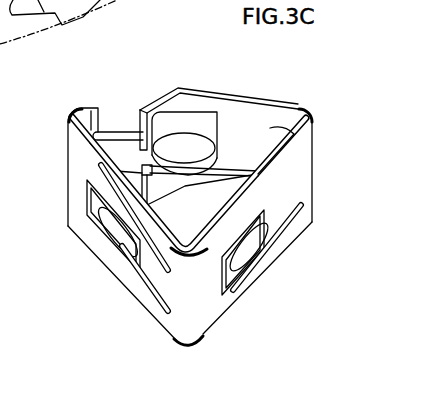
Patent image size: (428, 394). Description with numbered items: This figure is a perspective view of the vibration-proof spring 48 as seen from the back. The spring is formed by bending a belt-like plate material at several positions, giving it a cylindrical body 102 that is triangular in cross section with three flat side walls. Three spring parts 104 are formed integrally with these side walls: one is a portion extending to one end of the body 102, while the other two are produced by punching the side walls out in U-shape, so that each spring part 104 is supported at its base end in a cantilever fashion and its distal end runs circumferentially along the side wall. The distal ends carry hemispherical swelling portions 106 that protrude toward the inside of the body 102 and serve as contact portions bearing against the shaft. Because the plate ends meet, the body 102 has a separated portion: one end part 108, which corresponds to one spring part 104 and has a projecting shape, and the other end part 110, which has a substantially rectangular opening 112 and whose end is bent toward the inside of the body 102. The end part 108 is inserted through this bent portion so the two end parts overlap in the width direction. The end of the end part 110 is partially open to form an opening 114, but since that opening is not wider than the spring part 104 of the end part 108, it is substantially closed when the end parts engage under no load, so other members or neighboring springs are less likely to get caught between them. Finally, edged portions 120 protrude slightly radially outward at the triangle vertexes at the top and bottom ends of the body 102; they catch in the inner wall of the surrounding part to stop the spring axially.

The vibration-proof spring 48 is at (284, 90).
The body 102 is at (70, 162).
The spring parts 104 is at (112, 132).
The swelling portions 106 is at (188, 148).
The end part 108 is at (214, 137).
The end part 110 is at (188, 90).
The opening 112 is at (270, 128).
The opening 114 is at (134, 133).
The edged portions 120 is at (70, 118).